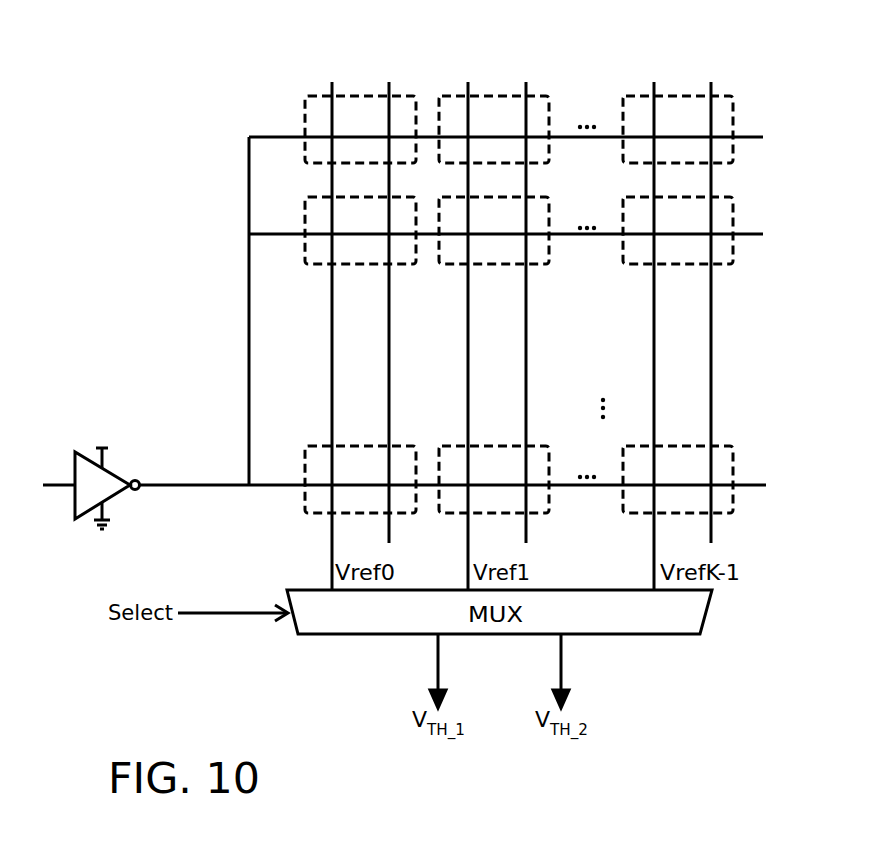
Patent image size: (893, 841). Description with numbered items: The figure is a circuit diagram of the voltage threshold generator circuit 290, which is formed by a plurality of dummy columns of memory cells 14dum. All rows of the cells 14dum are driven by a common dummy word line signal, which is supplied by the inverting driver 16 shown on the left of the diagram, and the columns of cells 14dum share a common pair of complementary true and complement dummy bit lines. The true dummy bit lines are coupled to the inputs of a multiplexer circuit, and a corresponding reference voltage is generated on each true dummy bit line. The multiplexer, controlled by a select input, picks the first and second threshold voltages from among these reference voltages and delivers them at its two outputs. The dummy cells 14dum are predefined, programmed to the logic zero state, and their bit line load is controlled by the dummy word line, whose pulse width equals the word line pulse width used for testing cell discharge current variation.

The dummy memory cell 14dum is at (542, 97).
The word line driver (inverter) 16 is at (113, 498).
The voltage threshold generator circuit 290 is at (137, 252).